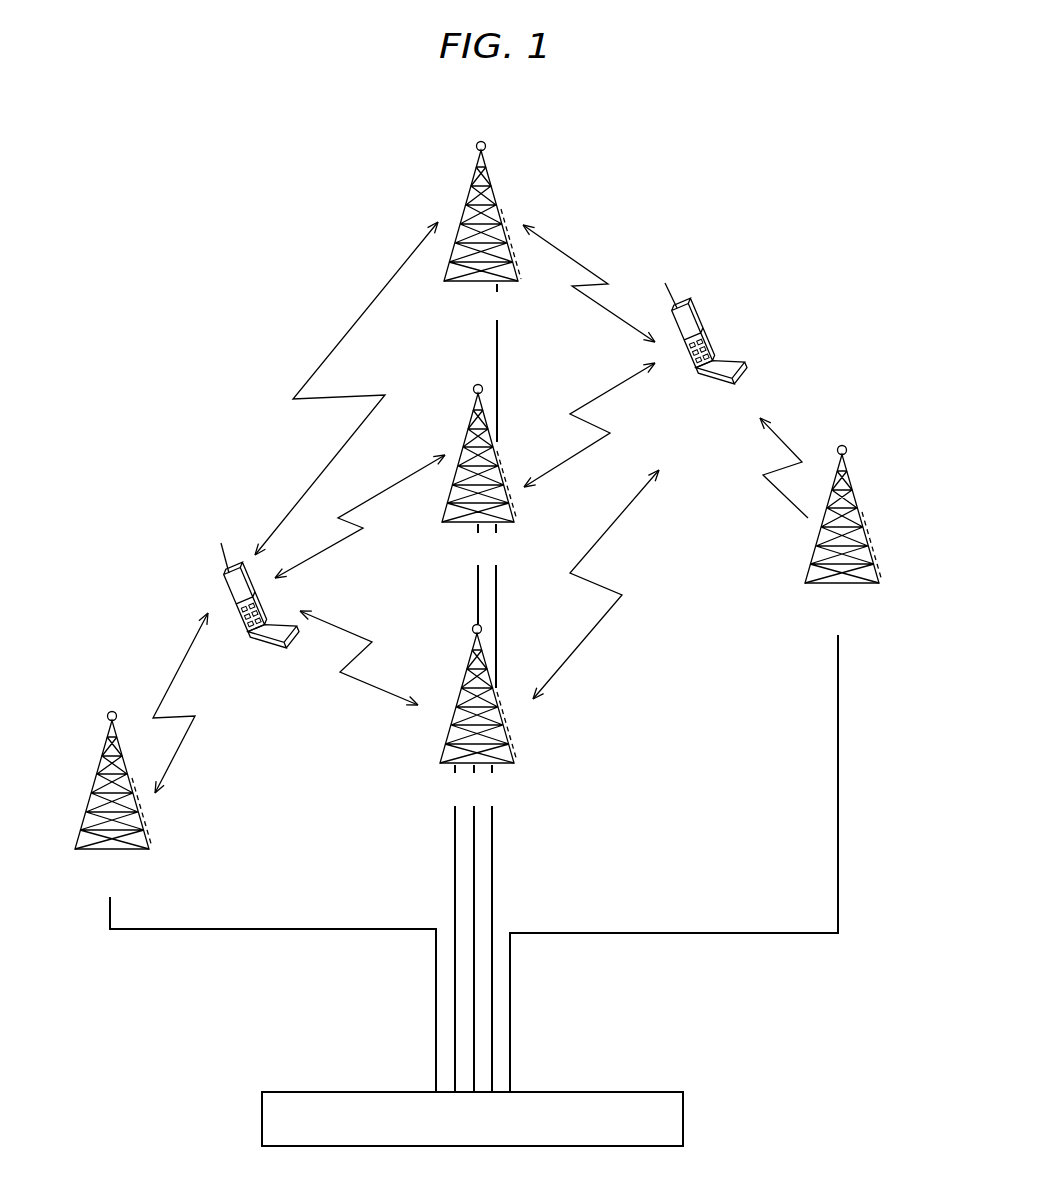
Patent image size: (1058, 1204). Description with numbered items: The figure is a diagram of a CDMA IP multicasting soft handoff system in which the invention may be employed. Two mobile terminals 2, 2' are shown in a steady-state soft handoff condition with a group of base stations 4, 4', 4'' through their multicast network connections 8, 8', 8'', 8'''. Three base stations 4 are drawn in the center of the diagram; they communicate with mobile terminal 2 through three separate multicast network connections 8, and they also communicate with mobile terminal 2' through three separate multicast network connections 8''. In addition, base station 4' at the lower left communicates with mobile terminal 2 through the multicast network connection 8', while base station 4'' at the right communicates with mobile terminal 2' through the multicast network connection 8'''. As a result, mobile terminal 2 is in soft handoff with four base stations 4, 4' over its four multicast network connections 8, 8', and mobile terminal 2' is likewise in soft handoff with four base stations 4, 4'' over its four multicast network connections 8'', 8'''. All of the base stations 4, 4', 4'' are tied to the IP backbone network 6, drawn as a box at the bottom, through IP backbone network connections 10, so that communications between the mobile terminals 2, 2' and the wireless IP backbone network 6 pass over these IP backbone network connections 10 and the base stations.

The mobile terminal 2 is at (243, 632).
The mobile terminal 2' is at (704, 368).
The base station 4 is at (471, 458).
The base station 4' is at (172, 810).
The base station 4'' is at (801, 572).
The IP backbone network 6 is at (683, 1118).
The multicast network connection 8 is at (350, 479).
The multicast network connection 8' is at (193, 703).
The multicast network connection 8'' is at (591, 461).
The multicast network connection 8''' is at (802, 460).
The IP backbone network connection 10 is at (509, 993).